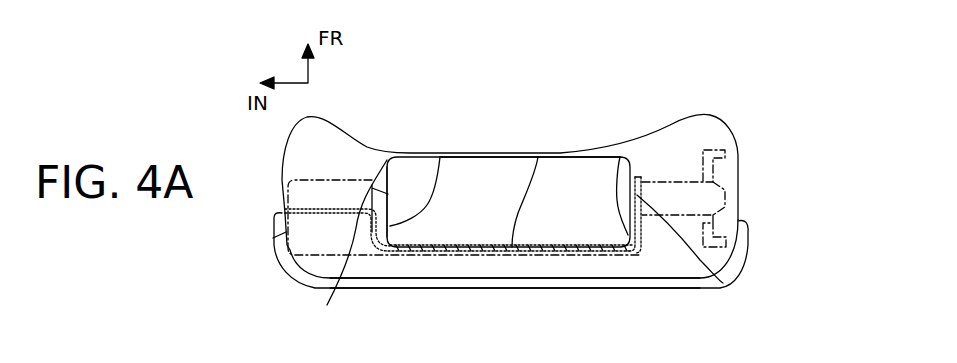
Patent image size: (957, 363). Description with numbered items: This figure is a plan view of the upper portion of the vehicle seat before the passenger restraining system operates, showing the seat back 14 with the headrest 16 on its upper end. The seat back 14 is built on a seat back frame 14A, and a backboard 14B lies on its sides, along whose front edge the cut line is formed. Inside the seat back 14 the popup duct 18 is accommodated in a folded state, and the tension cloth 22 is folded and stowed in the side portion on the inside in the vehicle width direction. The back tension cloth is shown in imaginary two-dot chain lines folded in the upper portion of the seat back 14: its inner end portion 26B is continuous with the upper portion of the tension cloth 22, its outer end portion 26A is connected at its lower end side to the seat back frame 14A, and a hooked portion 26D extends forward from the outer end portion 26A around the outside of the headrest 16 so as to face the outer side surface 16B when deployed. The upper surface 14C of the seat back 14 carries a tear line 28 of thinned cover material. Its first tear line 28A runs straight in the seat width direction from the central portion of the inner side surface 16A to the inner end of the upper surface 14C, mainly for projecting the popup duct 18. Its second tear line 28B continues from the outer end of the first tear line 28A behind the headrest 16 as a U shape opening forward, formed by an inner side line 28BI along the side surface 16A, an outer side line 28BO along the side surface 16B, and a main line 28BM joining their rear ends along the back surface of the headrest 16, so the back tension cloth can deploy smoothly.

The seat back 14 is at (573, 291).
The seat back frame 14A is at (684, 173).
The backboard 14B is at (463, 288).
The upper surface of the seat back 14C is at (546, 267).
The headrest 16 is at (588, 224).
The side surface of the headrest 16A is at (335, 244).
The side surface of the headrest 16B is at (723, 283).
The popup duct 18 is at (330, 187).
The tension cloth 22 is at (273, 240).
The outer end portion 26A is at (641, 250).
The inner end portion 26B is at (383, 257).
The hooked portion 26D is at (650, 177).
The tear line 28 is at (578, 63).
The first tear line 28A is at (387, 160).
The second tear line 28B is at (663, 107).
The inner side line 28BI is at (440, 157).
The main line 28BM is at (538, 157).
The outer side line 28BO is at (620, 157).